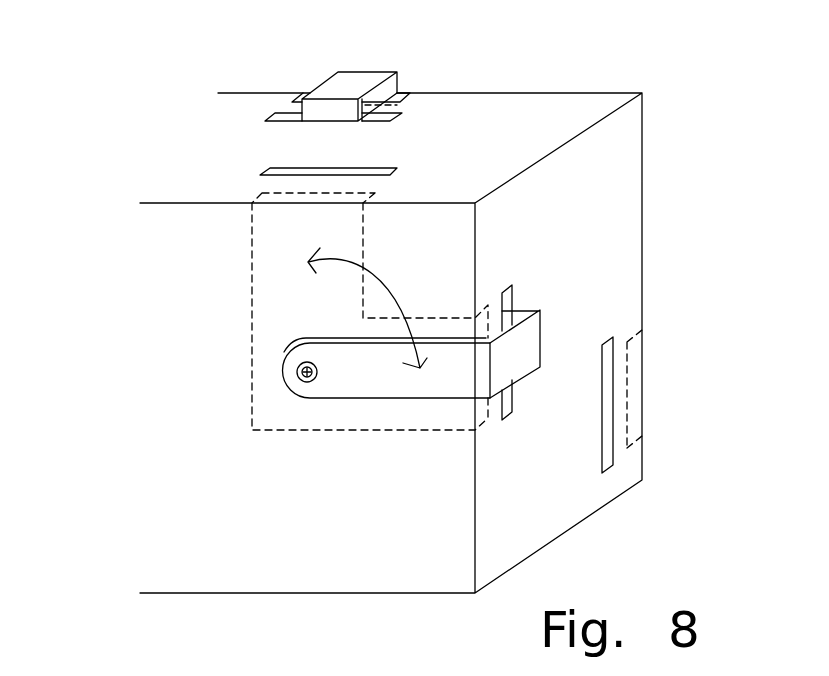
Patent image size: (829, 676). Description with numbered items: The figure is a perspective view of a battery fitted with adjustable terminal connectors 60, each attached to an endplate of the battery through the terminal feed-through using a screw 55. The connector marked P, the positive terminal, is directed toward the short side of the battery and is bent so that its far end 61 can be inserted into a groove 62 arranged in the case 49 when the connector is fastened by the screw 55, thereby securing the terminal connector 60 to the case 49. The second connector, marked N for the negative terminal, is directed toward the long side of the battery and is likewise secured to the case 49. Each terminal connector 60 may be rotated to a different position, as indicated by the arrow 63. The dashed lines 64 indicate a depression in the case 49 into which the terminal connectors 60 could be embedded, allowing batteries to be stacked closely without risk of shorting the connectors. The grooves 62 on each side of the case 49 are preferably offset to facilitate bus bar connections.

The case 49 is at (610, 187).
The screw 55 is at (300, 378).
The terminal connector 60 is at (363, 82).
The far end 61 is at (533, 317).
The groove 62 is at (290, 118).
The arrow 63 is at (367, 308).
The dashed lines 64 is at (302, 97).